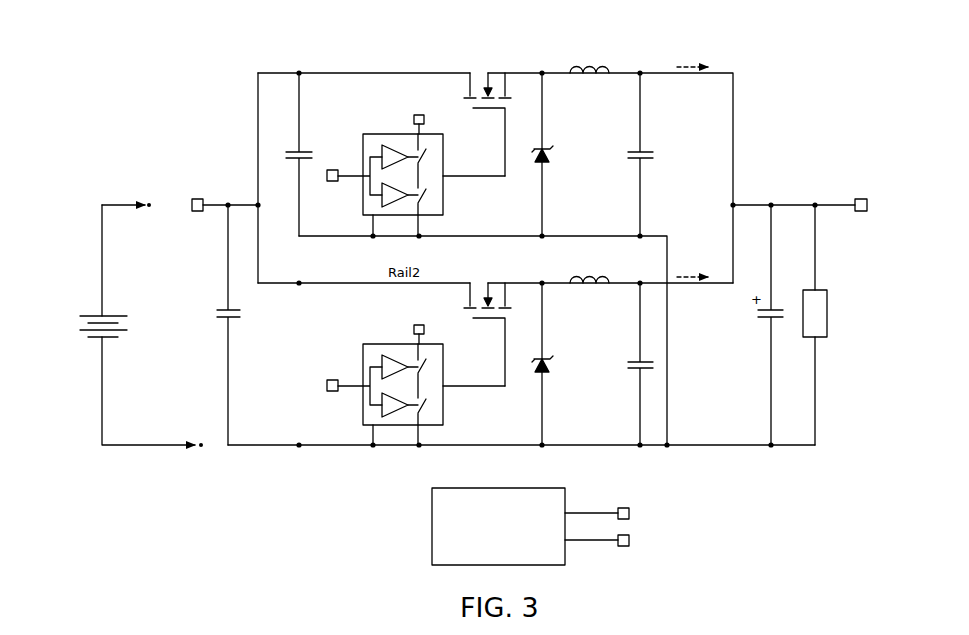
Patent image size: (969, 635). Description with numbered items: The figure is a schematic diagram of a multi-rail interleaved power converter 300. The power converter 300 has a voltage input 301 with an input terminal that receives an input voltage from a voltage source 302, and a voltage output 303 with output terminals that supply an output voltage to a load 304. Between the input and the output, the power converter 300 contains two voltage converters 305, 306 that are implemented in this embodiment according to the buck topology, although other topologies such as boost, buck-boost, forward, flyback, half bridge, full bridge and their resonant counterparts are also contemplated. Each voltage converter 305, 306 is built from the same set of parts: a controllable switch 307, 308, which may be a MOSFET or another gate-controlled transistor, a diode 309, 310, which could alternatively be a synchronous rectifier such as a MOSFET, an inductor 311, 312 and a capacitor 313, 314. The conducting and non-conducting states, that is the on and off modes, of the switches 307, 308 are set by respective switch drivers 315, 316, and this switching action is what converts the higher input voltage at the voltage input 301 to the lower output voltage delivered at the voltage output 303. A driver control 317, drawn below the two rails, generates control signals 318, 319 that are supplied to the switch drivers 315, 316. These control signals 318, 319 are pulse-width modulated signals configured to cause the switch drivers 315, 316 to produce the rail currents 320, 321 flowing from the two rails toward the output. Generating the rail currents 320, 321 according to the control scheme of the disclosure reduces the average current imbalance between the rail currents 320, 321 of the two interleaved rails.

The interleaved power converter 300 is at (138, 128).
The voltage input 301 is at (197, 198).
The voltage source 302 is at (93, 312).
The voltage output 303 is at (863, 198).
The load 304 is at (827, 313).
The voltage converter 305 is at (235, 93).
The voltage converter 306 is at (213, 379).
The controllable switch 307 is at (470, 92).
The controllable switch 308 is at (470, 302).
The diode 309 is at (538, 172).
The diode 310 is at (538, 382).
The inductor 311 is at (590, 63).
The inductor 312 is at (588, 275).
The capacitor 313 is at (637, 158).
The capacitor 314 is at (633, 370).
The switch driver 315 is at (368, 130).
The switch driver 316 is at (368, 340).
The driver control 317 is at (432, 528).
The control signal 318 is at (583, 512).
The control signal 319 is at (583, 542).
The rail current 320 is at (722, 50).
The rail current 321 is at (718, 240).